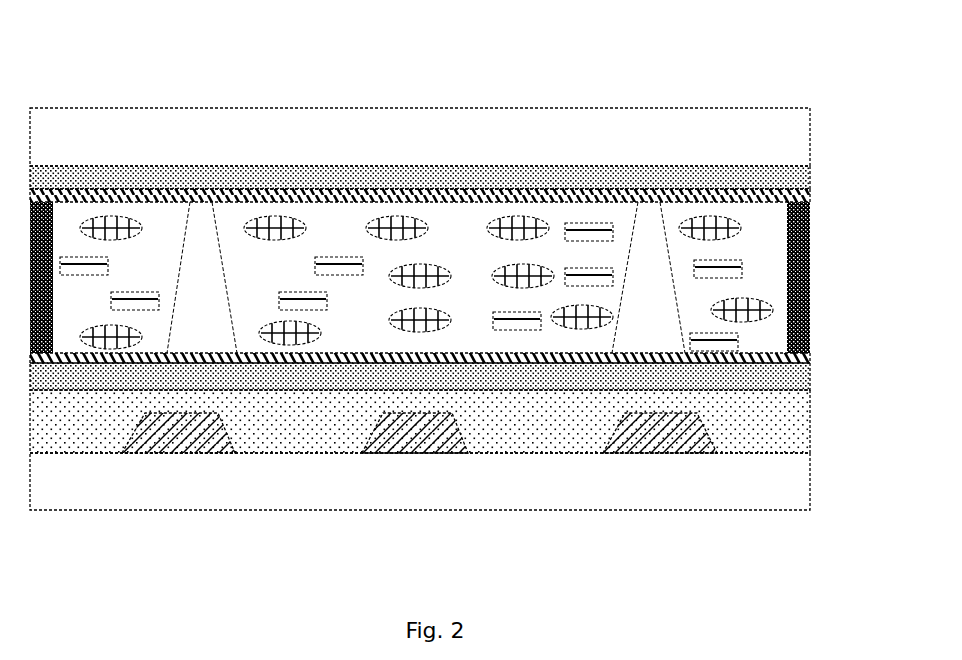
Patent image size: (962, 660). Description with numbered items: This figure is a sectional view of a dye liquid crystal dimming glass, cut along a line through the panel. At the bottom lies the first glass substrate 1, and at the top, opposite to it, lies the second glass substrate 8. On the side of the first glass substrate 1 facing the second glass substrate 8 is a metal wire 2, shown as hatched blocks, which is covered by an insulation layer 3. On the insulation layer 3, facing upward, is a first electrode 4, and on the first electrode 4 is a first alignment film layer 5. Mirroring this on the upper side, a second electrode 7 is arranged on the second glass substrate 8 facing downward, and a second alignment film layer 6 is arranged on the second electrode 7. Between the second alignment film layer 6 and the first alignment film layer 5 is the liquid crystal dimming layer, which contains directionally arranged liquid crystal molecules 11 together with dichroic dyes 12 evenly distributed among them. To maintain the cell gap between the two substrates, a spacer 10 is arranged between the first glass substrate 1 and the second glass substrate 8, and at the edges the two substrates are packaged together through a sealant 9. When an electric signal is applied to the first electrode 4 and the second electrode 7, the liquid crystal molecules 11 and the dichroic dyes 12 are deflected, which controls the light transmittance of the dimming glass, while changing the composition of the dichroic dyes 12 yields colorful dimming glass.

The first glass substrate 1 is at (810, 473).
The metal wire 2 is at (418, 453).
The insulation layer 3 is at (810, 413).
The first electrode 4 is at (810, 377).
The first alignment film layer 5 is at (810, 360).
The second alignment film layer 6 is at (810, 197).
The second electrode 7 is at (810, 168).
The second glass substrate 8 is at (810, 135).
The sealant 9 is at (810, 270).
The spacer 10 is at (188, 352).
The liquid crystal molecules 11 is at (402, 226).
The dichroic dyes 12 is at (590, 222).